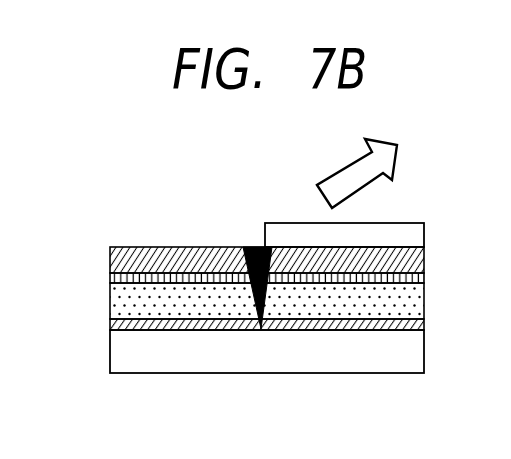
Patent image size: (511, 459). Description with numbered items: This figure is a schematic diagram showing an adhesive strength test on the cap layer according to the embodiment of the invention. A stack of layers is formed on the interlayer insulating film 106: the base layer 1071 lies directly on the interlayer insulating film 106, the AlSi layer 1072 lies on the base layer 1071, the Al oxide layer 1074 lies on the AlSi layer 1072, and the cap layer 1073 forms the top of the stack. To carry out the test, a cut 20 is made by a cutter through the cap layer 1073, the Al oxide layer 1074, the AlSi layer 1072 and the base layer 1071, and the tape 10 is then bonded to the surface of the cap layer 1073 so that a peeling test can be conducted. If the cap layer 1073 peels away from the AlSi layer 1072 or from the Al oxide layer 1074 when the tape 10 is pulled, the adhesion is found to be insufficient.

The tape 10 is at (413, 235).
The cut 20 is at (253, 245).
The interlayer insulating film 106 is at (417, 355).
The base layer 1071 is at (417, 325).
The AlSi layer 1072 is at (417, 302).
The cap layer 1073 is at (416, 263).
The Al oxide layer 1074 is at (417, 278).